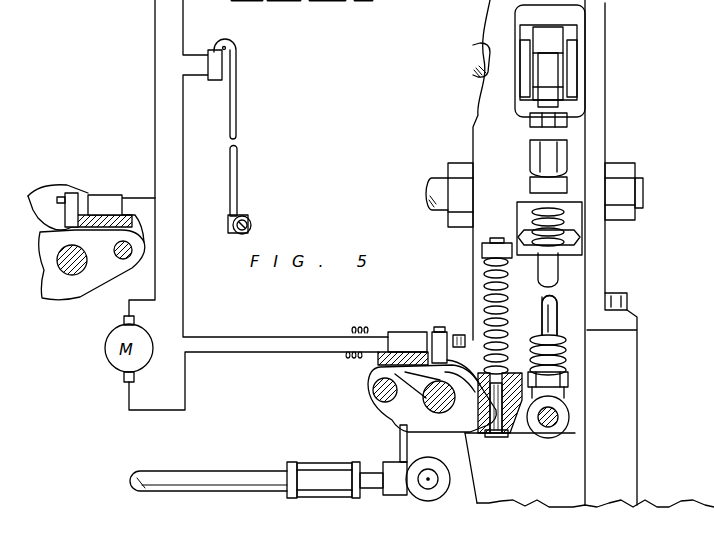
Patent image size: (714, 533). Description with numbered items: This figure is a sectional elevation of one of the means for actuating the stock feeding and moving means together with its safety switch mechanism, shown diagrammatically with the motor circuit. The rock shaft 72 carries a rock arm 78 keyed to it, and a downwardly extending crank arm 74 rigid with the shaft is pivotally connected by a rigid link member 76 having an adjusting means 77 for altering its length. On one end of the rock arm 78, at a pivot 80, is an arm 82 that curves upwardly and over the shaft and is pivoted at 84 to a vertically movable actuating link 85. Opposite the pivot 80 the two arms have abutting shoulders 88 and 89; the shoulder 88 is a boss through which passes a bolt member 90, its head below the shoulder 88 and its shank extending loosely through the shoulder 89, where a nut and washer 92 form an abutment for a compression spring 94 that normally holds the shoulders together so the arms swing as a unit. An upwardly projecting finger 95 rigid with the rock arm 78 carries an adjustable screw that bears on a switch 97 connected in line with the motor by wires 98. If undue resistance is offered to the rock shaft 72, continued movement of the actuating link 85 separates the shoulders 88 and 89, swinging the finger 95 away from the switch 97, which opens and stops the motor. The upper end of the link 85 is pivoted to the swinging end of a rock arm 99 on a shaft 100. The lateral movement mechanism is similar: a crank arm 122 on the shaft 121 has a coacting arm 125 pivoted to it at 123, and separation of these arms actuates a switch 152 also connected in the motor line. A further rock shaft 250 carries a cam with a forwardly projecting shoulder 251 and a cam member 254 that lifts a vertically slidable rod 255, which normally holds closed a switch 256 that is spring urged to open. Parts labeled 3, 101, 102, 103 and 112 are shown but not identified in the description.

The housing 3 is at (600, 110).
The rock shaft 72 is at (427, 397).
The crank arm 74 is at (400, 446).
The link member 76 is at (178, 491).
The adjusting means 77 is at (330, 493).
The rock arm 78 is at (445, 436).
The pivot 80 is at (375, 390).
The arm 82 is at (438, 327).
The pivot 84 is at (551, 438).
The actuating link 85 is at (542, 312).
The shoulder 88 is at (490, 420).
The shoulder 89 is at (470, 341).
The bolt member 90 is at (492, 437).
The nut and washer 92 is at (482, 252).
The compression spring 94 is at (484, 278).
The finger 95 is at (447, 336).
The switch 97 is at (395, 332).
The wires 98 is at (232, 350).
The rock arm 99 is at (568, 40).
The shaft 100 is at (479, 45).
The solenoid core 101 is at (563, 83).
The pin 102 is at (542, 270).
The bracket 103 is at (528, 205).
The plunger 112 is at (530, 150).
The shaft 121 is at (58, 263).
The crank arm 122 is at (64, 290).
The pivot 123 is at (114, 249).
The arm 125 is at (57, 182).
The switch 152 is at (113, 200).
The rock shaft 250 is at (252, 226).
The cam shoulder 251 is at (229, 234).
The cam member 254 is at (232, 216).
The rod 255 is at (238, 89).
The switch 256 is at (222, 82).